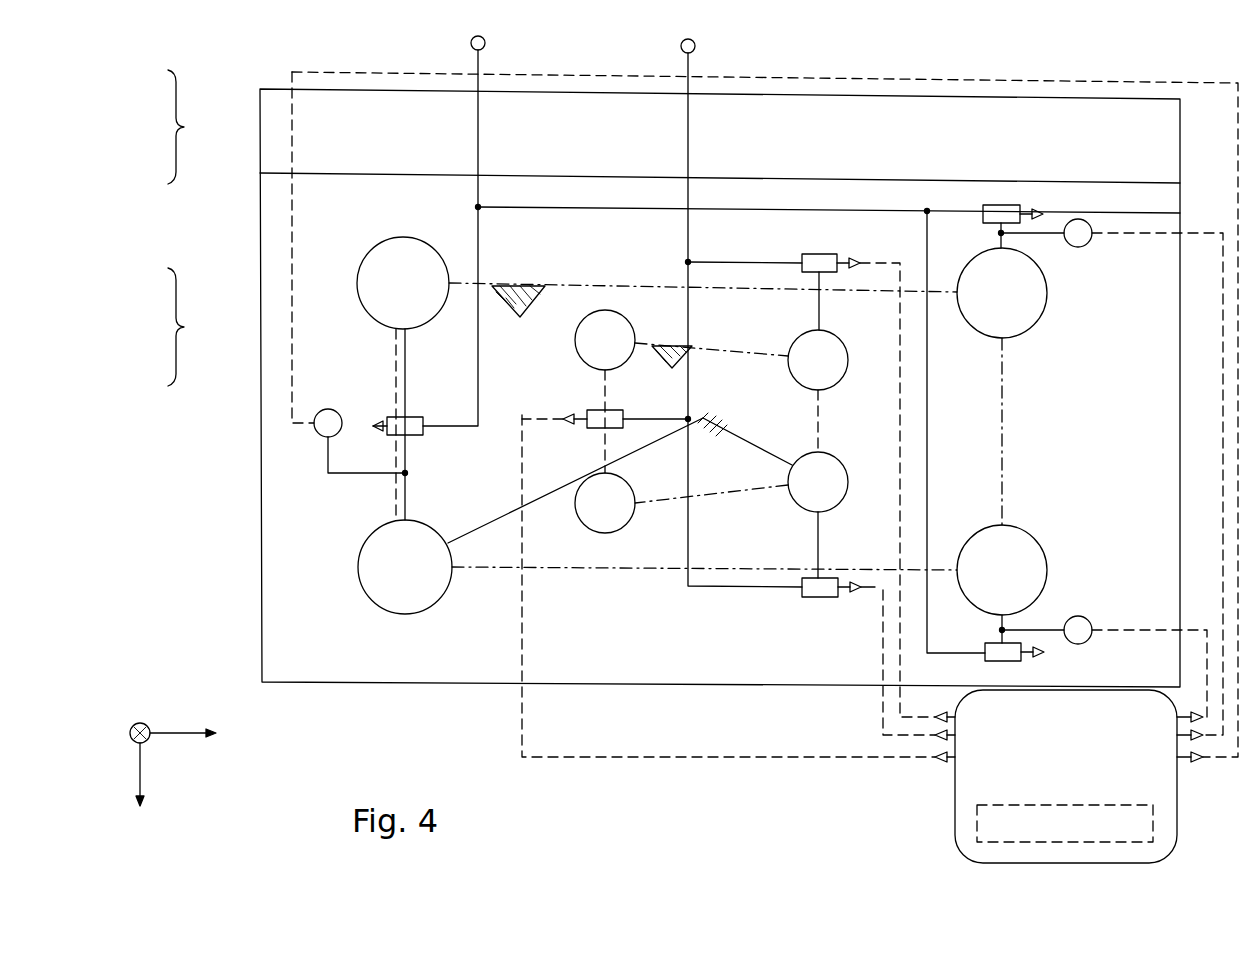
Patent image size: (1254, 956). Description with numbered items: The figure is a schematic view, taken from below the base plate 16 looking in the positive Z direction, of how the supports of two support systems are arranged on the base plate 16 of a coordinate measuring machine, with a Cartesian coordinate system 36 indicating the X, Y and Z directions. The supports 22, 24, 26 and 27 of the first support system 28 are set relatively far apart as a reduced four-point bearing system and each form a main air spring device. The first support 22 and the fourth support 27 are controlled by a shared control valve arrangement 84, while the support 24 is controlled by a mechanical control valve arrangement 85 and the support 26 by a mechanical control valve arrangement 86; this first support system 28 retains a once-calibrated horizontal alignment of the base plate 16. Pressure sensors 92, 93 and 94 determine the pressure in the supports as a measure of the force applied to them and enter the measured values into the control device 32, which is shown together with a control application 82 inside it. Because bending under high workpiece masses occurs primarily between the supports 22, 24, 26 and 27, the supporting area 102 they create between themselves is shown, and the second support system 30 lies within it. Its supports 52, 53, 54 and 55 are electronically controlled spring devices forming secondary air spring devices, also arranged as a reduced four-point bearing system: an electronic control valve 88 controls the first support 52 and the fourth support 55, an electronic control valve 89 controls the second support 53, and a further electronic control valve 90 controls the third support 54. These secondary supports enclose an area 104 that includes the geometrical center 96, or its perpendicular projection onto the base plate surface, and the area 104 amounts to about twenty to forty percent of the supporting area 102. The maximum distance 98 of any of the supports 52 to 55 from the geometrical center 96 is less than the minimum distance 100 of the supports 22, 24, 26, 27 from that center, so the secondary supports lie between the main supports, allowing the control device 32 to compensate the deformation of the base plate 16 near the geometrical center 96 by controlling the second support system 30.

The base plate 16 is at (275, 580).
The first support 22 is at (418, 295).
The second support 24 is at (1017, 305).
The third support 26 is at (1017, 582).
The fourth support 27 is at (420, 579).
The first support system 28 is at (181, 127).
The second support system 30 is at (181, 327).
The control device 32 is at (1077, 764).
The Cartesian coordinate system 36 is at (146, 716).
The first support 52 is at (620, 352).
The second support 53 is at (833, 372).
The third support 54 is at (833, 494).
The fourth support 55 is at (620, 515).
The memory / control module 82 is at (1077, 836).
The shared control valve arrangement 84 is at (415, 417).
The mechanical control valve arrangement 85 is at (1000, 205).
The mechanical control valve arrangement 86 is at (985, 655).
The electronic control valve 88 is at (615, 410).
The electronic control valve 89 is at (818, 256).
The electronic control valve 90 is at (822, 597).
The pressure sensor 92 is at (328, 409).
The pressure sensor 93 is at (1078, 248).
The pressure sensor 94 is at (1078, 616).
The geometrical center 96 is at (712, 416).
The maximum distance 98 is at (768, 445).
The minimum distance 100 is at (492, 522).
The supporting area 102 is at (517, 290).
The area 104 is at (666, 346).